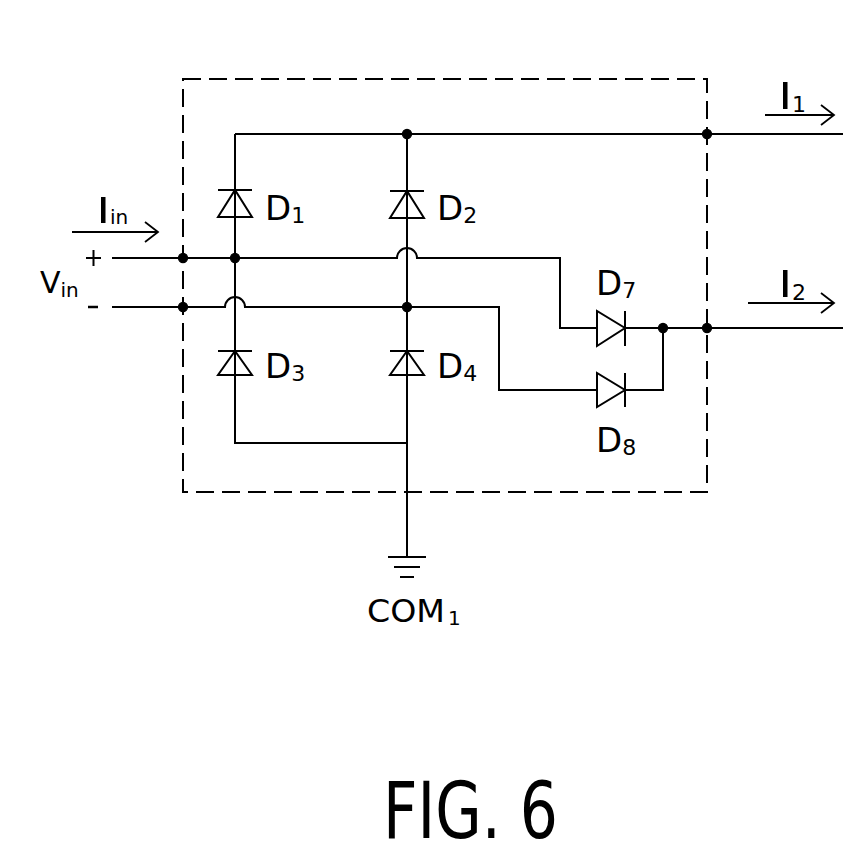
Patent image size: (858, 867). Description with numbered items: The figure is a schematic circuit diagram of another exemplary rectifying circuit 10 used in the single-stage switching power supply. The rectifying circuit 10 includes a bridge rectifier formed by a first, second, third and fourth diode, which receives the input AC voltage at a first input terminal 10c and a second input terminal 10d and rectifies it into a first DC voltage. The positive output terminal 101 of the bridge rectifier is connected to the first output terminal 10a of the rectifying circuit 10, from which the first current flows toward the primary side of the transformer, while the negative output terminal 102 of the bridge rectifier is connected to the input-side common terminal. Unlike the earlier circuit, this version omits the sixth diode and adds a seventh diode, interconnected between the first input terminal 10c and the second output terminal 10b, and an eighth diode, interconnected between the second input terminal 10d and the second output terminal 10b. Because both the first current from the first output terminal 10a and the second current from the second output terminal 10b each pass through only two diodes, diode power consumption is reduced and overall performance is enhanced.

The rectifying circuit 10 is at (645, 492).
The first output terminal 10a is at (707, 134).
The second output terminal 10b is at (707, 328).
The first input terminal 10c is at (183, 258).
The second input terminal 10d is at (183, 307).
The positive output terminal 101 is at (437, 134).
The negative output terminal 102 is at (407, 466).